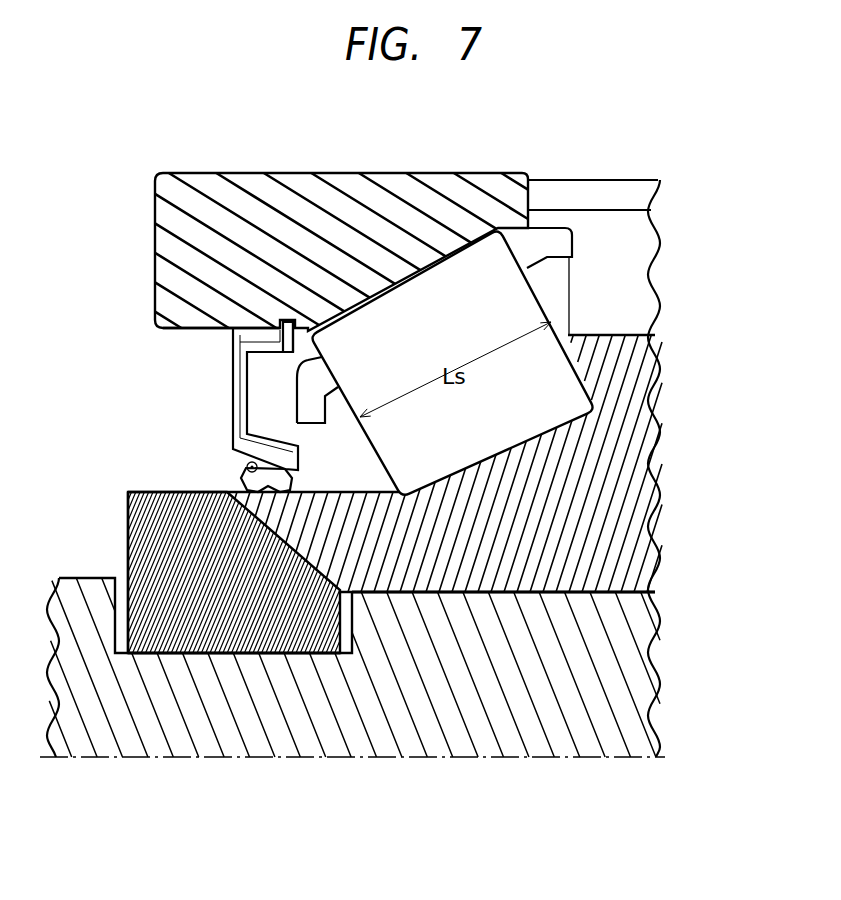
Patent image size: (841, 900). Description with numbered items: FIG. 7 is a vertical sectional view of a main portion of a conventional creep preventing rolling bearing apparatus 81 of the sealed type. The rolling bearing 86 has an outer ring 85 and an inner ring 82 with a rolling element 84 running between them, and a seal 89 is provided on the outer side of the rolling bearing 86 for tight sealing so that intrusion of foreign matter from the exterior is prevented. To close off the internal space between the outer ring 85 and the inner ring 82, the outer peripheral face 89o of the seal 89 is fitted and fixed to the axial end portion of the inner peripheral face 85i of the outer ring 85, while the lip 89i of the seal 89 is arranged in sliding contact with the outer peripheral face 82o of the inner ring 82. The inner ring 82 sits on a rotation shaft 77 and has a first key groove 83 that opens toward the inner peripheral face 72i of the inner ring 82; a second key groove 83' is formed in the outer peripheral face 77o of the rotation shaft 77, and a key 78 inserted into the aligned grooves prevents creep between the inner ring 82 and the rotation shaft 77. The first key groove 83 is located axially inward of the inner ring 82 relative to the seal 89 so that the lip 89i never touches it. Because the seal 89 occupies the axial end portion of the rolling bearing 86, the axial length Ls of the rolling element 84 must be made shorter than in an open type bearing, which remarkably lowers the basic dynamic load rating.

The creep preventing rolling bearing apparatus 81 is at (101, 308).
The outer ring 85 is at (180, 237).
The inner peripheral face of the outer ring 85i is at (217, 331).
The seal 89 is at (243, 383).
The outer peripheral face of the seal 89o is at (297, 335).
The lip of the seal 89i is at (245, 493).
The rolling element 84 is at (487, 308).
The rolling bearing 86 is at (683, 358).
The inner ring 82 is at (515, 485).
The outer peripheral face of the inner ring 82o is at (200, 493).
The first key groove 83 is at (234, 551).
The key 78 is at (180, 563).
The second key groove 83' is at (232, 726).
The rotation shaft 77 is at (435, 685).
The outer peripheral face of the rotation shaft 77o is at (493, 588).
The inner peripheral face of the inner ring 72i is at (390, 593).